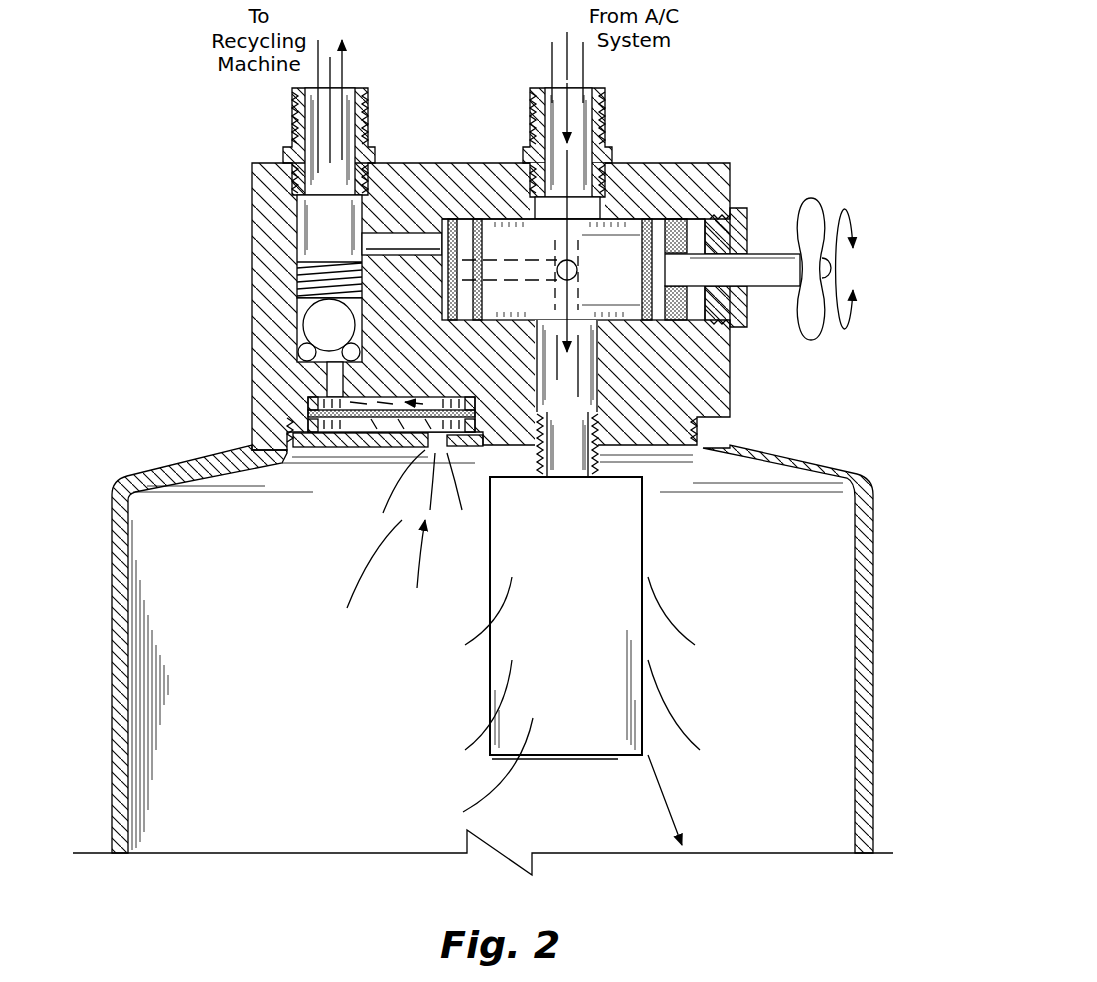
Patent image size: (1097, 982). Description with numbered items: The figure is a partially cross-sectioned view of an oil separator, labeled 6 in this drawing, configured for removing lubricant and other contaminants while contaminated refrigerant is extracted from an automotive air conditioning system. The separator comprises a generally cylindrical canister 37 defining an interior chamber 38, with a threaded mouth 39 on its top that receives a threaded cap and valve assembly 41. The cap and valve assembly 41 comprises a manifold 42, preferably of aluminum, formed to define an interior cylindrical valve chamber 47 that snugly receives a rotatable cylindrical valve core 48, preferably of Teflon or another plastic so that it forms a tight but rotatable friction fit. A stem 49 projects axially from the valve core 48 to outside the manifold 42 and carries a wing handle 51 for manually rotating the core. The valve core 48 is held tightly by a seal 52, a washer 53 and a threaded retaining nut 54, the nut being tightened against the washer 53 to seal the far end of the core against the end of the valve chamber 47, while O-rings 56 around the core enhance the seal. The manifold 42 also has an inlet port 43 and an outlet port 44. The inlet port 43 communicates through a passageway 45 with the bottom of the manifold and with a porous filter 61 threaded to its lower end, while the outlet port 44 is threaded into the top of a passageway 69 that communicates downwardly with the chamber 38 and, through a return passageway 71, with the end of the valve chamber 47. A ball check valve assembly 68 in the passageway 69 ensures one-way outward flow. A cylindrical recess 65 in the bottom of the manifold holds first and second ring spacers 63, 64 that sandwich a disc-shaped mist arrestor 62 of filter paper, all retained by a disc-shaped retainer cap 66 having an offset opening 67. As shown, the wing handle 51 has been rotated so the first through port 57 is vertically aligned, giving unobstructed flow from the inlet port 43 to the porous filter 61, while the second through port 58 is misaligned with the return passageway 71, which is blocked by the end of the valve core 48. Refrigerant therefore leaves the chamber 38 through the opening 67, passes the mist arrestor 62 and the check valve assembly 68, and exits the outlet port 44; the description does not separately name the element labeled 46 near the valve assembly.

The refrigerant recovery adapter assembly 6 is at (153, 250).
The canister 37 is at (876, 542).
The interior chamber 38 is at (333, 734).
The threaded mouth 39 is at (286, 436).
The cap and valve assembly 41 is at (789, 122).
The manifold 42 is at (663, 168).
The inlet port 43 is at (616, 93).
The outlet port 44 is at (376, 90).
The passageway 45 is at (553, 478).
The valve 46 is at (762, 343).
The valve chamber 47 is at (487, 215).
The valve core 48 is at (612, 238).
The stem 49 is at (766, 265).
The wing handle 51 is at (812, 200).
The seal 52 is at (668, 230).
The washer 53 is at (693, 313).
The retaining nut 54 is at (736, 212).
The O-rings 56 is at (458, 252).
The first through port 57 is at (524, 208).
The second through port 58 is at (481, 215).
The porous filter 61 is at (655, 538).
The mist arrestor 62 is at (308, 412).
The first ring spacer 63 is at (308, 420).
The second ring spacer 64 is at (308, 392).
The cylindrical recess 65 is at (387, 397).
The retainer cap 66 is at (336, 448).
The offset opening 67 is at (478, 448).
The ball valve assembly 68 is at (302, 320).
The passageway 69 is at (312, 250).
The return passageway 71 is at (380, 240).